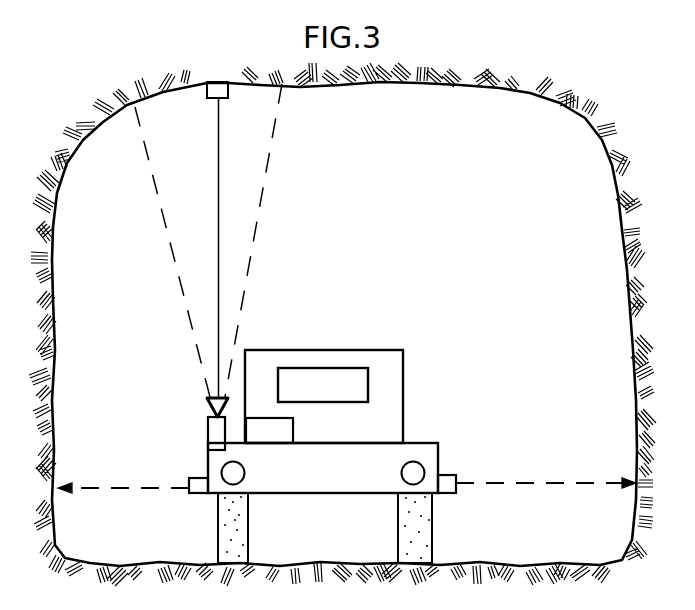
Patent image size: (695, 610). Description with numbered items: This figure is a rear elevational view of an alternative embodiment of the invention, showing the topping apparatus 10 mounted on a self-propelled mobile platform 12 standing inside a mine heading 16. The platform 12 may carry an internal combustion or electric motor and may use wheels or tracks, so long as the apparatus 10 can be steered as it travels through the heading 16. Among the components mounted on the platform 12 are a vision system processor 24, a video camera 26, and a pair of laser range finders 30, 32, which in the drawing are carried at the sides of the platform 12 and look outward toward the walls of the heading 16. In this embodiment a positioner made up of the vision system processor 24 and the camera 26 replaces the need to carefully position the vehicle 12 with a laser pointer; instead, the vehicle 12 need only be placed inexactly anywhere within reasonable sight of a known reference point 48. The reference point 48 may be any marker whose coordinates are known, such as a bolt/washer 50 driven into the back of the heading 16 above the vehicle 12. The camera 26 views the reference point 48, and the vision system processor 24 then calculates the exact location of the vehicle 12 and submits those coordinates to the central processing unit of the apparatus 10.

The topping apparatus 10 is at (347, 438).
The self-propelled mobile platform 12 is at (208, 470).
The mine heading 16 is at (612, 191).
The vision system processor 24 is at (278, 432).
The video camera 26 is at (208, 428).
The laser range finder 30 is at (198, 493).
The laser range finder 32 is at (456, 475).
The known reference point 48 is at (228, 89).
The bolt/washer 50 is at (210, 98).